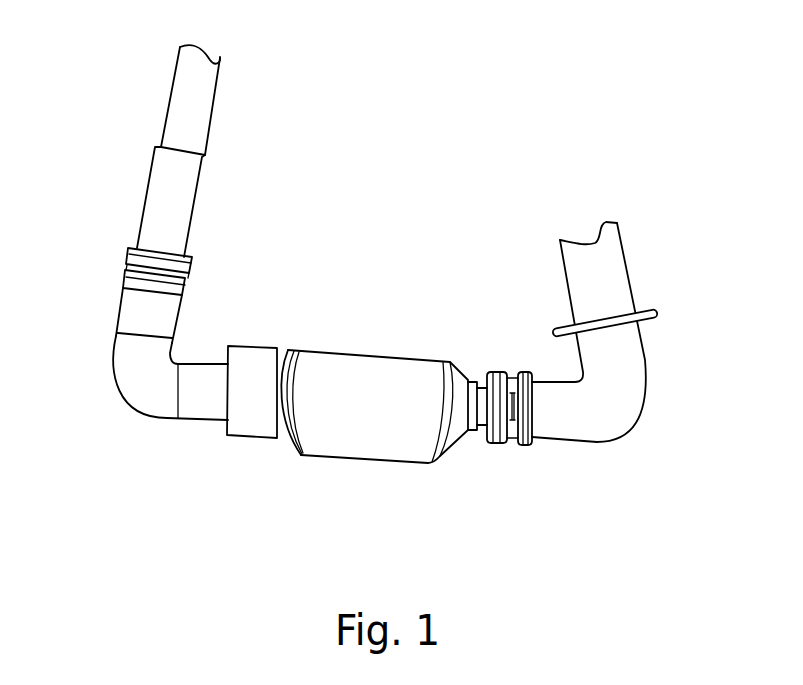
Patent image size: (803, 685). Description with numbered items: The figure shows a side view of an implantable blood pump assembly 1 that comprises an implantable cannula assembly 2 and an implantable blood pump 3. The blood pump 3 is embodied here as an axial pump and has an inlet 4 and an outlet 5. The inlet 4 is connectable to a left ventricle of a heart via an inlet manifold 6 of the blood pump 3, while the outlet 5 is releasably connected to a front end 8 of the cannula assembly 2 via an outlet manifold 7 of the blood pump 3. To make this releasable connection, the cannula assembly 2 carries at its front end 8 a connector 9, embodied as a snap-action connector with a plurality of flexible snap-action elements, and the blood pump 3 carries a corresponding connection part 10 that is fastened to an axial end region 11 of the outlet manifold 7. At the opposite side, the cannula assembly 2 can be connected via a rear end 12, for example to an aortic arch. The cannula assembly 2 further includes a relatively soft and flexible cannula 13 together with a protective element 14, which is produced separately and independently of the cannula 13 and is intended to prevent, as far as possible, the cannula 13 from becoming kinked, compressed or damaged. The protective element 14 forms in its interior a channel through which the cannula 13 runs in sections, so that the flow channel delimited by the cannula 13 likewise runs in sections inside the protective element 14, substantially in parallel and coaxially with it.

The blood pump assembly 1 is at (392, 235).
The cannula assembly 2 is at (112, 213).
The blood pump 3 is at (360, 490).
The inlet 4 is at (480, 422).
The outlet 5 is at (283, 437).
The inlet manifold 6 is at (630, 412).
The outlet manifold 7 is at (133, 393).
The front end 8 is at (210, 252).
The connector 9 is at (131, 250).
The connection part 10 is at (187, 292).
The axial end region 11 is at (135, 305).
The rear end 12 is at (242, 52).
The cannula 13 is at (185, 82).
The protective element 14 is at (188, 187).